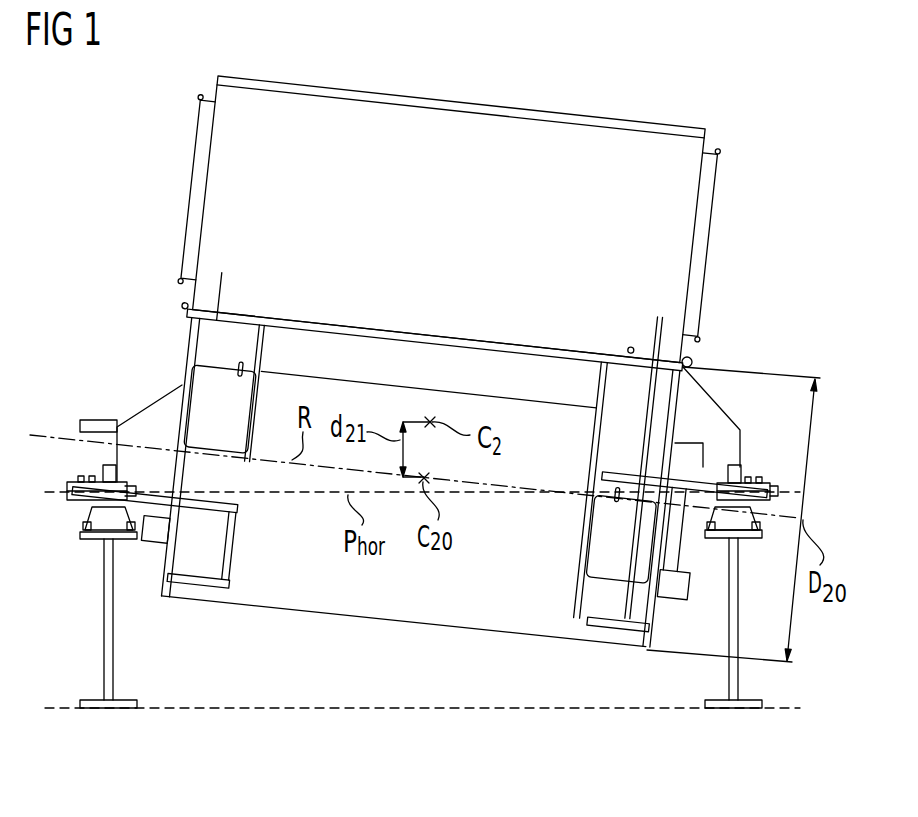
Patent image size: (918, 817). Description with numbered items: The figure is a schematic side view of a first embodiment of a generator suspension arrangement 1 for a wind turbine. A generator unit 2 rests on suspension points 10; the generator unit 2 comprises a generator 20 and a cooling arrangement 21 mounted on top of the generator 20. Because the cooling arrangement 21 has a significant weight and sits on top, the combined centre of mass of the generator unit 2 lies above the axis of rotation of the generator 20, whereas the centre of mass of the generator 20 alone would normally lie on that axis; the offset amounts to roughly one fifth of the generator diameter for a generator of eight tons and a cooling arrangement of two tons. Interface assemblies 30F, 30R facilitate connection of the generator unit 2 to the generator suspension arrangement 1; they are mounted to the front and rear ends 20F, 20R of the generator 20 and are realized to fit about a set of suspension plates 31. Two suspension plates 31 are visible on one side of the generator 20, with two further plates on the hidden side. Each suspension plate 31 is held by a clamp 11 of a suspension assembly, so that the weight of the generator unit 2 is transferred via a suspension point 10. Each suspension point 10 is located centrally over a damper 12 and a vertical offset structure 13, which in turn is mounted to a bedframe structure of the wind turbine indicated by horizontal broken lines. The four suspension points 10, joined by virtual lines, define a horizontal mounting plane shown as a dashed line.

The generator suspension arrangement 1 is at (351, 671).
The generator unit 2 is at (187, 337).
The suspension point 10 is at (107, 503).
The clamp 11 is at (100, 477).
The damper 12 is at (117, 513).
The vertical offset structure 13 is at (107, 601).
The generator 20 is at (280, 595).
The front end of the generator 20F is at (202, 593).
The rear end of the generator 20R is at (610, 638).
The cooling arrangement 21 is at (680, 210).
The front interface assembly 30F is at (177, 550).
The rear interface assembly 30R is at (660, 610).
The suspension plate 31 is at (155, 480).